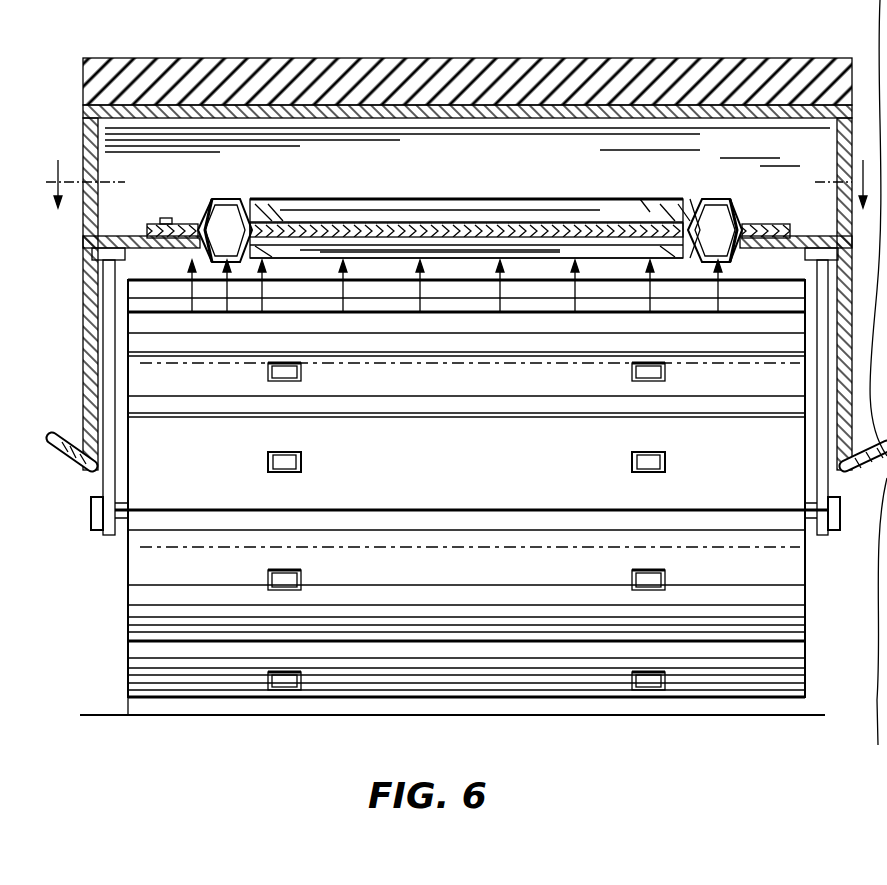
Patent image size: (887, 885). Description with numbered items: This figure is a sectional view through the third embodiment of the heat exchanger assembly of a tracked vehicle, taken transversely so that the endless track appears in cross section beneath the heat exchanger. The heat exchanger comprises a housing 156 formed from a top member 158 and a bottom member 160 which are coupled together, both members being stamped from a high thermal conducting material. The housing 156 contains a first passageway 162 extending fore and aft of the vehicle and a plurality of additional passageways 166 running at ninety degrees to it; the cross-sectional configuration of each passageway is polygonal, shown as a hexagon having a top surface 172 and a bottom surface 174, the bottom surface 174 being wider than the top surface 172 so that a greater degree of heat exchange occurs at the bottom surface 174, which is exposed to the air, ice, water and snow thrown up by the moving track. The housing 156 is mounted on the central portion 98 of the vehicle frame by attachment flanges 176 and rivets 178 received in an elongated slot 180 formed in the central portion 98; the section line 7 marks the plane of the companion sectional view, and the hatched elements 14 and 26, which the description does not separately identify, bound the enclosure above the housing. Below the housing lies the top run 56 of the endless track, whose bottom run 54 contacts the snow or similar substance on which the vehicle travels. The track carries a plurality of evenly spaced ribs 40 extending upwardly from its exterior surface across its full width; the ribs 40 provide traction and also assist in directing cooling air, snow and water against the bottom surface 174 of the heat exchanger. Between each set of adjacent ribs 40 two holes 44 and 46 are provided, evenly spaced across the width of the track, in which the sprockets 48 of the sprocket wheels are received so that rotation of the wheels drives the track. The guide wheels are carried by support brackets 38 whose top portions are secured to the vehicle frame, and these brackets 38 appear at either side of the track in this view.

The section line 7- 7 is at (457, 179).
The housing 14 is at (866, 118).
The insulation 26 is at (605, 54).
The support bracket 38 is at (103, 486).
The rib 40 is at (795, 520).
The hole 44 is at (656, 460).
The hole 46 is at (292, 460).
The sprocket 48 is at (268, 460).
The bottom run 54 is at (596, 720).
The top run 56 is at (600, 270).
The central portion 98 is at (124, 236).
The housing 156 is at (390, 160).
The top member 158 is at (430, 196).
The bottom member 160 is at (562, 252).
The first passageway 162 is at (190, 250).
The additional passageways 166 is at (640, 198).
The top surface 172 is at (205, 200).
The bottom surface 174 is at (226, 320).
The attachment flange 176 is at (156, 224).
The rivet 178 is at (196, 216).
The elongated slot 180 is at (738, 250).